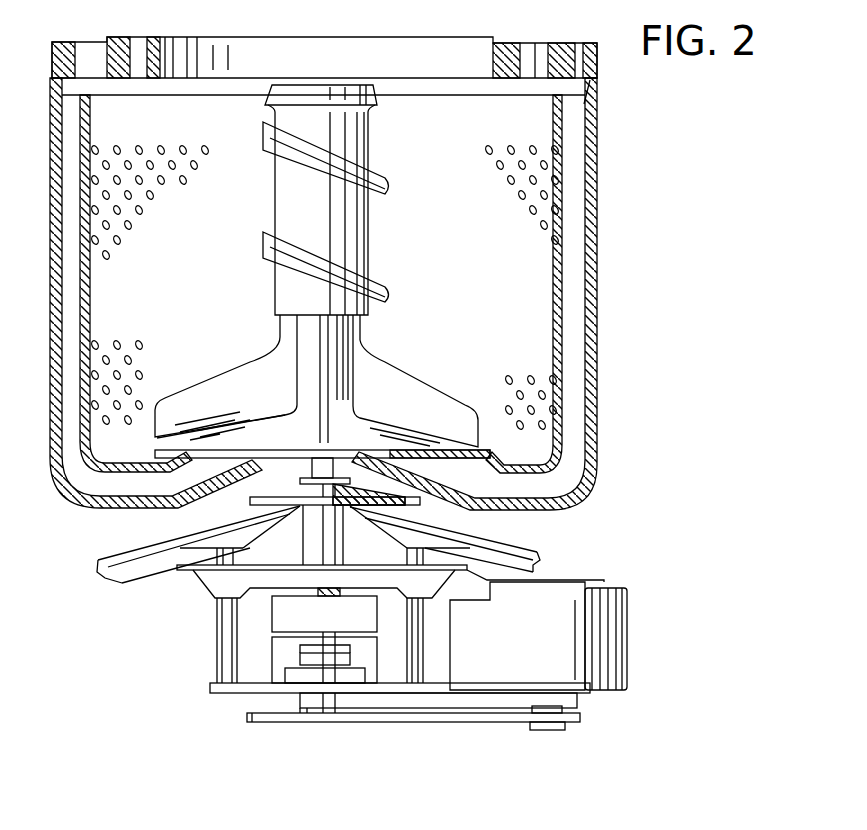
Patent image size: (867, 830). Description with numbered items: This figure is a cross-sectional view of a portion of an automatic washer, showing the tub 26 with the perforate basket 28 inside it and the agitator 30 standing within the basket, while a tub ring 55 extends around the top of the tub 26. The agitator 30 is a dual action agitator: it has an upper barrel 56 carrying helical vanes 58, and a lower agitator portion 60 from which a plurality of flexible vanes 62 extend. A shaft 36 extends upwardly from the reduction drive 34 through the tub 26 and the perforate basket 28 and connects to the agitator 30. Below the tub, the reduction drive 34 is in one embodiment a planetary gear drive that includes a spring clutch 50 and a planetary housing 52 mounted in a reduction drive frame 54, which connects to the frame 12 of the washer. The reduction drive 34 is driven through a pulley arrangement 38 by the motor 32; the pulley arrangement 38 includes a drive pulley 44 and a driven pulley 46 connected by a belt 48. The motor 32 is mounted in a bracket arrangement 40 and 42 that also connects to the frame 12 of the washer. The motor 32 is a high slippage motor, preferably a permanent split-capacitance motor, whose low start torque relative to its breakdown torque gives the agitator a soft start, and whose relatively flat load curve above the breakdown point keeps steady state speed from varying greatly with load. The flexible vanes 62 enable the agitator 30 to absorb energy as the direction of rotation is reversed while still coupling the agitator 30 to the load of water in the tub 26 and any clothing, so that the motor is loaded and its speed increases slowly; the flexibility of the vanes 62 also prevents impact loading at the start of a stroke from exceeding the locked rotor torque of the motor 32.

The frame 12 is at (123, 567).
The tub 26 is at (597, 157).
The perforate basket 28 is at (562, 268).
The agitator 30 is at (362, 335).
The motor 32 is at (628, 603).
The reduction drive 34 is at (270, 643).
The shaft 36 is at (303, 470).
The pulley arrangement 38 is at (423, 727).
The bracket arrangement 40 is at (585, 580).
The bracket arrangement 42 is at (577, 697).
The drive pulley 44 is at (543, 730).
The driven pulley 46 is at (268, 727).
The belt 48 is at (480, 727).
The spring clutch 50 is at (348, 657).
The planetary housing 52 is at (272, 616).
The reduction drive frame 54 is at (223, 580).
The tub ring 55 is at (565, 43).
The upper barrel 56 is at (365, 244).
The helical vanes 58 is at (383, 183).
The lower agitator portion 60 is at (483, 453).
The flexible vanes 62 is at (452, 395).